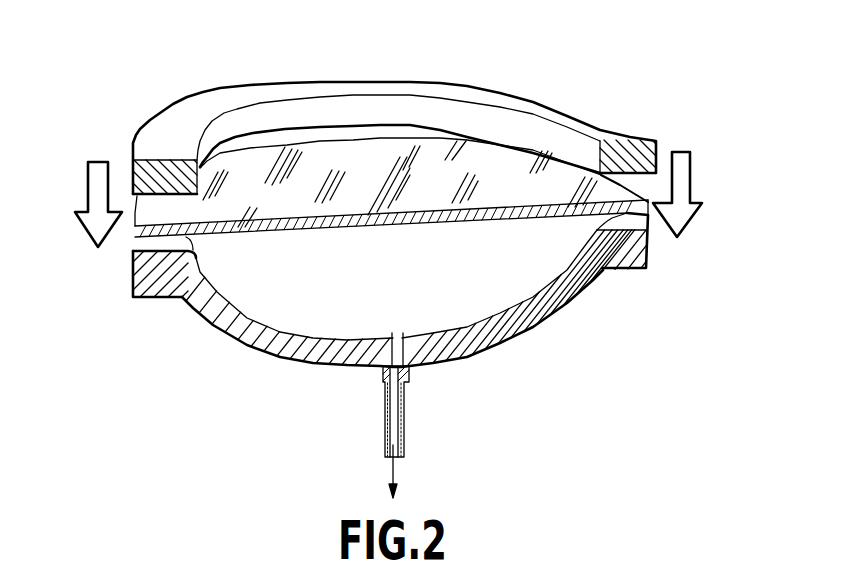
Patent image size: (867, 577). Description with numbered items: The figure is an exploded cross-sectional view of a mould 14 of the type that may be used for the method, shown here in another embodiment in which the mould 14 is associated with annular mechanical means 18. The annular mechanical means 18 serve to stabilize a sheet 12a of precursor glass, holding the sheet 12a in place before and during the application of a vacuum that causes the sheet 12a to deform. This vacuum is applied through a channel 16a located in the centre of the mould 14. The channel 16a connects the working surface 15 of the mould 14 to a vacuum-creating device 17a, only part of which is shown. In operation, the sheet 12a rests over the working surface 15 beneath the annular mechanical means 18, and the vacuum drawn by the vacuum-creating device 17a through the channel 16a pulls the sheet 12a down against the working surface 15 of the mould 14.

The sheet 12a is at (443, 158).
The mould 14 is at (668, 257).
The working surface 15 is at (482, 281).
The channel 16a is at (398, 350).
The vacuum-creating device 17a is at (405, 424).
The annular mechanical means 18 is at (576, 93).